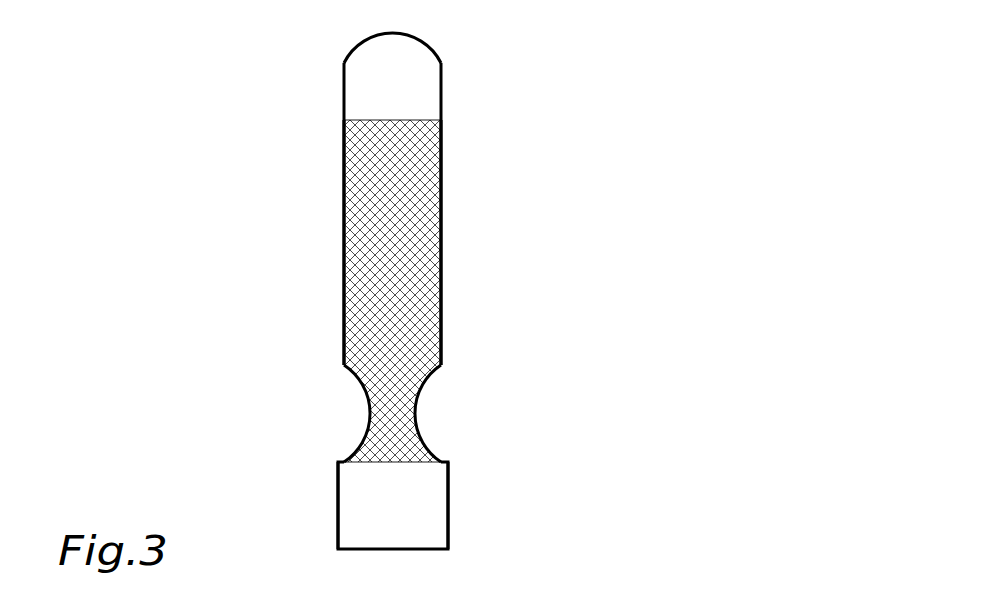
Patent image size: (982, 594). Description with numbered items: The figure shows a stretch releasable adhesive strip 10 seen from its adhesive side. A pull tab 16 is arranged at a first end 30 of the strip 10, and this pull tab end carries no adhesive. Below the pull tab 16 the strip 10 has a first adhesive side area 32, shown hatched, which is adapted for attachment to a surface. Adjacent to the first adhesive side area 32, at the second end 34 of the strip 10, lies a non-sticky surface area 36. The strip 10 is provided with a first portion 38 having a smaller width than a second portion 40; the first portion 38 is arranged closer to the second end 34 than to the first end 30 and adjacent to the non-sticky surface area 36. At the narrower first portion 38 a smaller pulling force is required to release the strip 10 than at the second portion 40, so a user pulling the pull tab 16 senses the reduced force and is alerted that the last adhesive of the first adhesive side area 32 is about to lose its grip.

The stretch releasable adhesive strip 10 is at (626, 54).
The pull tab 16 is at (368, 88).
The first end 30 is at (452, 91).
The first adhesive side area 32 is at (450, 120).
The second end 34 is at (328, 504).
The non-sticky surface area 36 is at (464, 462).
The first portion 38 is at (328, 365).
The second portion 40 is at (340, 120).